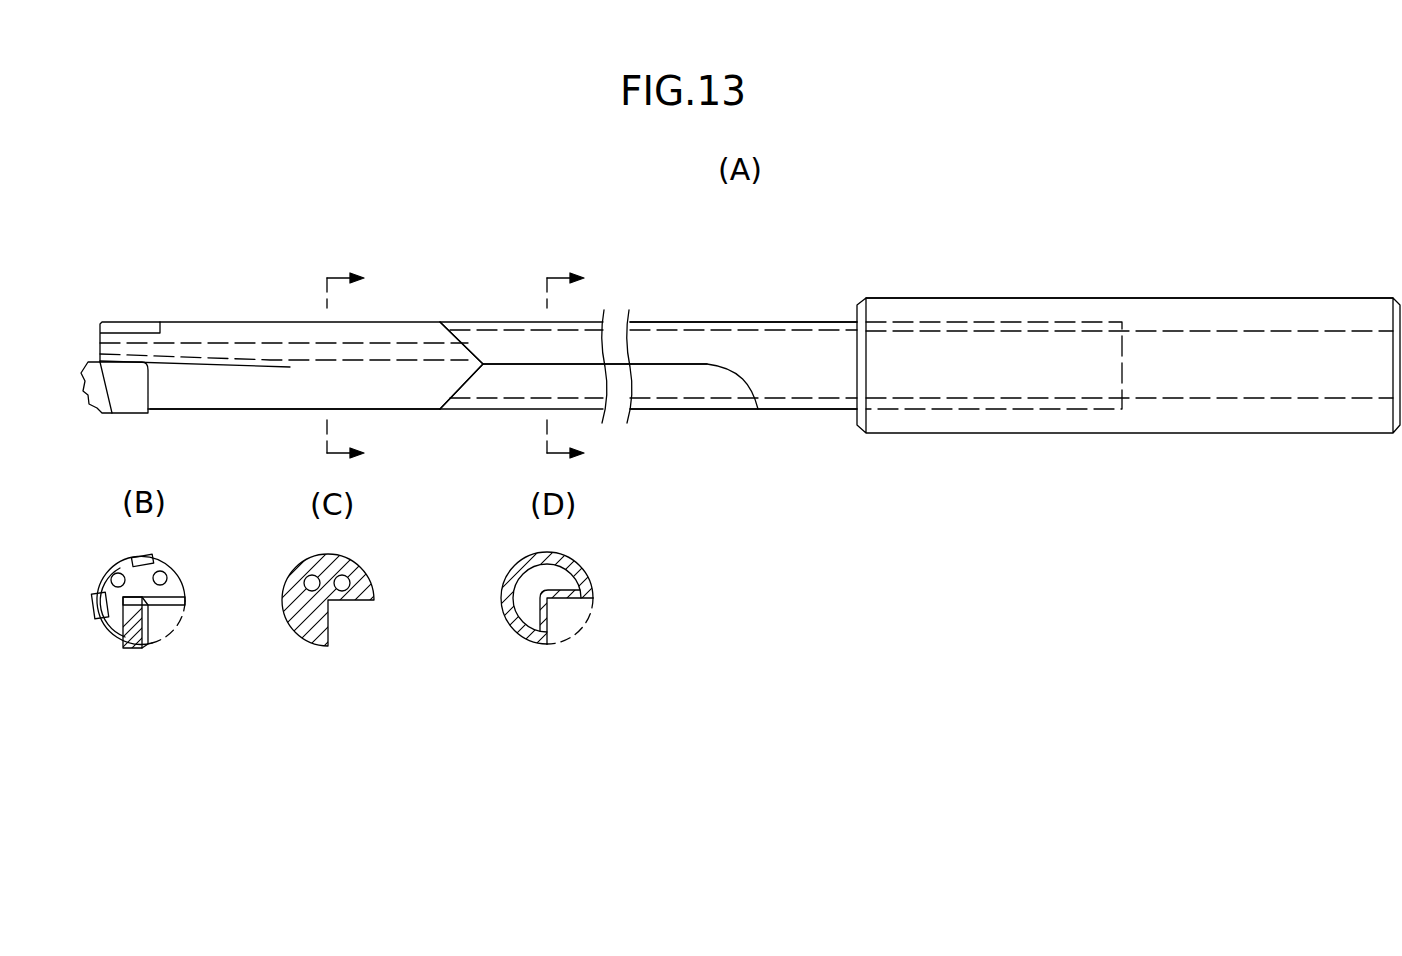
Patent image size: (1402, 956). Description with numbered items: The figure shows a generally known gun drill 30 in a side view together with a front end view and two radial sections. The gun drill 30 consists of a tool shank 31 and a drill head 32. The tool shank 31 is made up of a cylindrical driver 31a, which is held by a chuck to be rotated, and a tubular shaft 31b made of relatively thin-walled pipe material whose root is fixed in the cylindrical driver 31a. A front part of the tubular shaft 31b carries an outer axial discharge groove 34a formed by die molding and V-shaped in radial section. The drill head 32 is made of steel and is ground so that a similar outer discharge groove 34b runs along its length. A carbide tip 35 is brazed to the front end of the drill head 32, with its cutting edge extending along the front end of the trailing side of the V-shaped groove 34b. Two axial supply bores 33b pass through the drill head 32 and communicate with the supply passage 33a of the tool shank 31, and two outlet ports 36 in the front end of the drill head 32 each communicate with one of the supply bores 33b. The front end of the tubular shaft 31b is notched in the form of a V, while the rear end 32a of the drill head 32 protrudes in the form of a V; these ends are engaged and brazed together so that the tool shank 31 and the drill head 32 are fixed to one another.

The gun drill 30 is at (685, 300).
The tool shank 31 is at (881, 298).
The cylindrical driver 31a is at (988, 310).
The tubular shaft 31b is at (755, 320).
The drill head 32 is at (246, 320).
The rear end of the drill head 32a is at (457, 398).
The supply passage 33a is at (830, 333).
The supply bores 33b is at (217, 349).
The discharge groove 34a is at (529, 385).
The discharge groove 34b is at (268, 372).
The carbide tip 35 is at (133, 395).
The outlet ports 36 is at (163, 573).